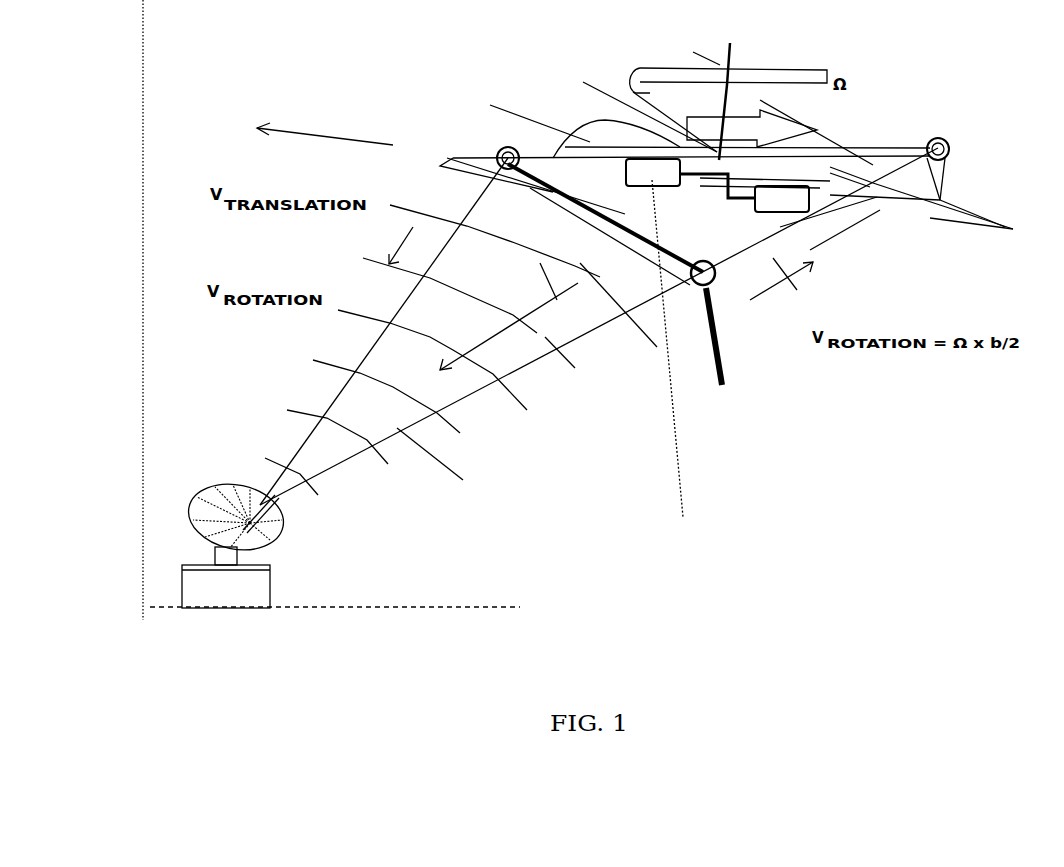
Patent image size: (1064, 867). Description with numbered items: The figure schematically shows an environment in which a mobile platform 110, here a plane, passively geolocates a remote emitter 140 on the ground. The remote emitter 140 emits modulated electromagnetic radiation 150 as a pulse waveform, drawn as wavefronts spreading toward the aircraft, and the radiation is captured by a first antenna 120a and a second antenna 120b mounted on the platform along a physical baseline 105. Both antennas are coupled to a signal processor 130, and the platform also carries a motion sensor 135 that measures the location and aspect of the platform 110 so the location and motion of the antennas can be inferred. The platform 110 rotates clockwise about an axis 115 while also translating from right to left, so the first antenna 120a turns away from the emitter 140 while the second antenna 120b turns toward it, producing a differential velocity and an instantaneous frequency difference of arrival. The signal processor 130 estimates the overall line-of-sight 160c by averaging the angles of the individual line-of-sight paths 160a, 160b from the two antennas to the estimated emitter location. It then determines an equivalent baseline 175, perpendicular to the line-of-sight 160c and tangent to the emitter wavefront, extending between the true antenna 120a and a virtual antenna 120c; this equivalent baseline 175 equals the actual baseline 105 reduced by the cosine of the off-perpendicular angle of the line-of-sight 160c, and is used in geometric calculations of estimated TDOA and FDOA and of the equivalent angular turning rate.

The actual baseline 105 is at (548, 145).
The mobile platform 110 is at (993, 230).
The axis 115 is at (733, 52).
The first antenna (first sensor) 120a is at (486, 150).
The second antenna (second sensor) 120b is at (944, 136).
The virtual antenna (sensor) 120c is at (799, 339).
The signal processor 130 is at (690, 178).
The motion sensor 135 is at (782, 199).
The remote emitter 140 is at (307, 548).
The electromagnetic radiation 150 is at (622, 378).
The line-of-sight path 160a is at (330, 400).
The line-of-sight path 160b is at (599, 326).
The line-of-sight 160c is at (563, 342).
The equivalent baseline 175 is at (673, 361).